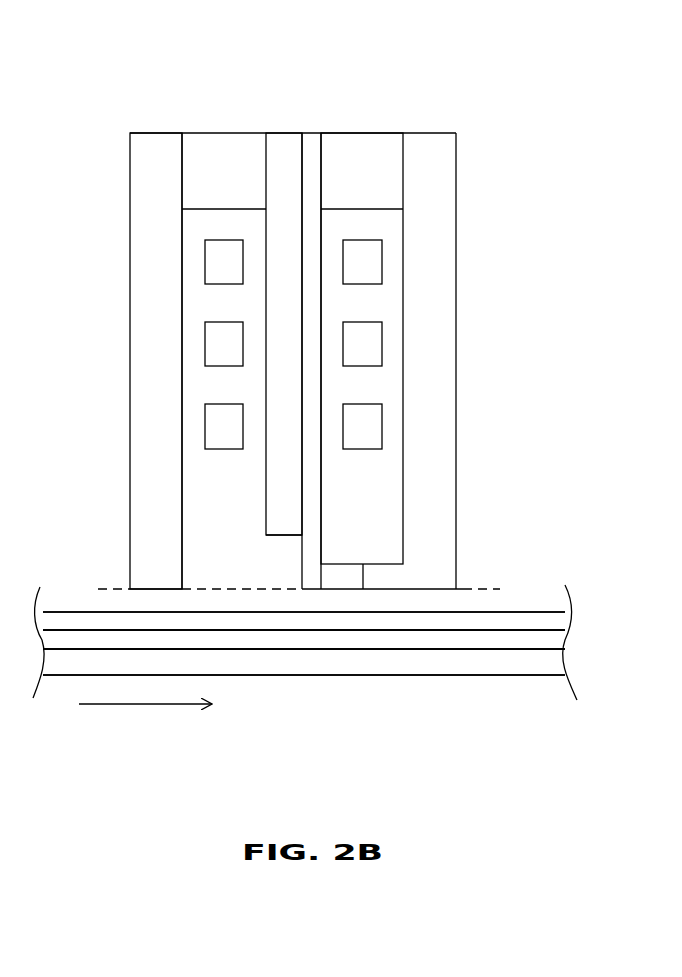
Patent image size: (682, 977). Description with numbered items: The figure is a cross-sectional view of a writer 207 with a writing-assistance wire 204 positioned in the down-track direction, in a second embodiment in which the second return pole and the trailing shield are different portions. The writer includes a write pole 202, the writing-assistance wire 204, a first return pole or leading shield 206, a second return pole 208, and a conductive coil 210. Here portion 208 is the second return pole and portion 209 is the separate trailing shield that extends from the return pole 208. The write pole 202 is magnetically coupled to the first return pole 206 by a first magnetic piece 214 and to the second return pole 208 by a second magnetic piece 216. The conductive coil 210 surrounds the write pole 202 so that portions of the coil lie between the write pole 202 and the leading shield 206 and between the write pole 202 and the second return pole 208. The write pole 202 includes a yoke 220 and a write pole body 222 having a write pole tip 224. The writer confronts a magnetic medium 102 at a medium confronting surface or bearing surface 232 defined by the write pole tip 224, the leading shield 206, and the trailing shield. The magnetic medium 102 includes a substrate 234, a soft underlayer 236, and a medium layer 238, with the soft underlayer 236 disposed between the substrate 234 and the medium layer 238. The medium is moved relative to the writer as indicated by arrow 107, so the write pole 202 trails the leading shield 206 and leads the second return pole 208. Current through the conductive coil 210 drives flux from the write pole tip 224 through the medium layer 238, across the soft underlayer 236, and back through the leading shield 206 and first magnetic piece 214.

The magnetic medium 102 is at (518, 699).
The arrow 107 is at (117, 707).
The write pole 202 is at (297, 114).
The writing-assistance wire 204 is at (330, 582).
The first return pole or leading shield 206 is at (143, 140).
The reader 207 is at (508, 196).
The second return pole or trailing shield 208 is at (423, 147).
The trailing shield 209 is at (373, 572).
The conductive coil 210 is at (210, 460).
The first magnetic piece 214 is at (205, 134).
The second magnetic piece 216 is at (367, 147).
The yoke 220 is at (274, 134).
The write pole body 222 is at (311, 150).
The write pole tip 224 is at (311, 553).
The medium confronting surface or bearing surface 232 is at (478, 579).
The substrate 234 is at (418, 663).
The soft underlayer 236 is at (375, 638).
The medium layer 238 is at (328, 622).